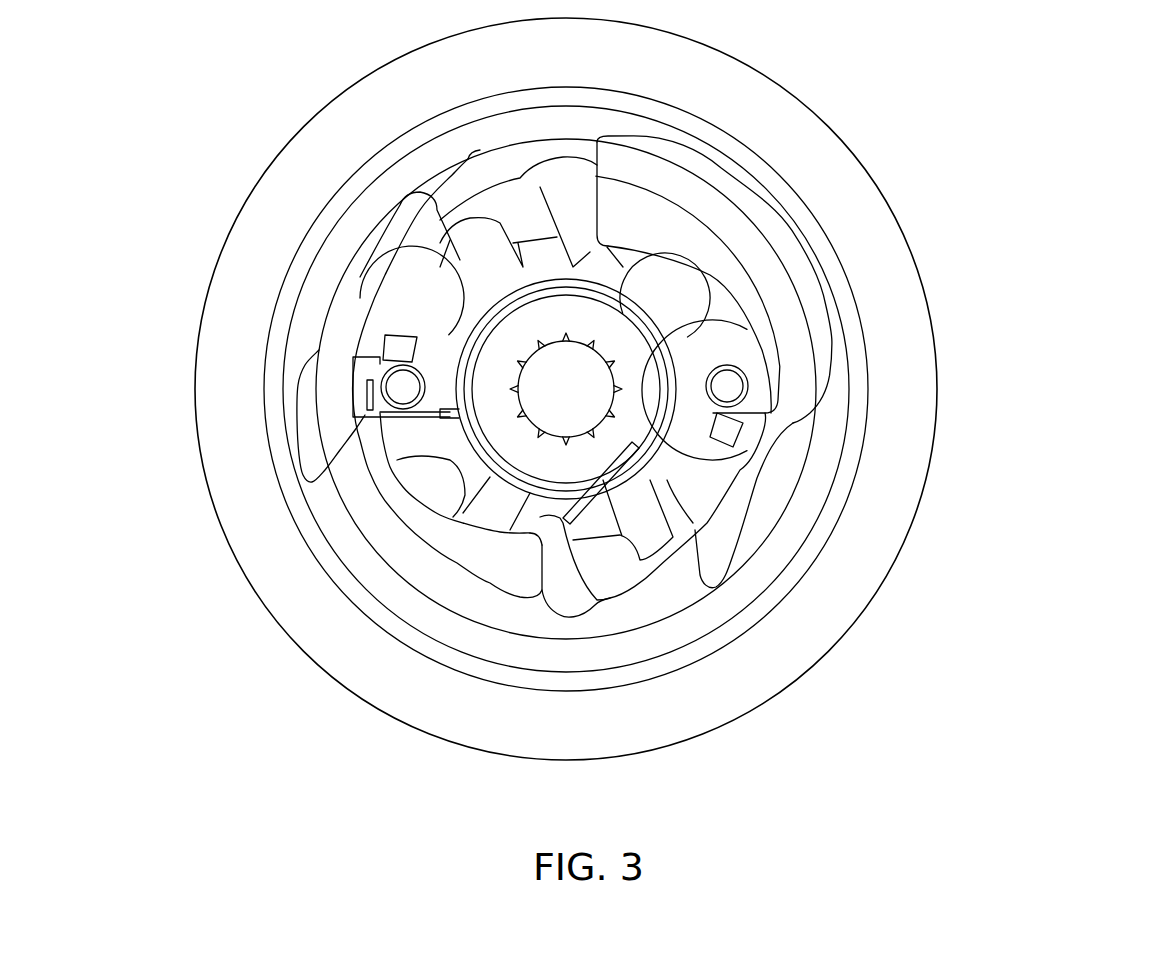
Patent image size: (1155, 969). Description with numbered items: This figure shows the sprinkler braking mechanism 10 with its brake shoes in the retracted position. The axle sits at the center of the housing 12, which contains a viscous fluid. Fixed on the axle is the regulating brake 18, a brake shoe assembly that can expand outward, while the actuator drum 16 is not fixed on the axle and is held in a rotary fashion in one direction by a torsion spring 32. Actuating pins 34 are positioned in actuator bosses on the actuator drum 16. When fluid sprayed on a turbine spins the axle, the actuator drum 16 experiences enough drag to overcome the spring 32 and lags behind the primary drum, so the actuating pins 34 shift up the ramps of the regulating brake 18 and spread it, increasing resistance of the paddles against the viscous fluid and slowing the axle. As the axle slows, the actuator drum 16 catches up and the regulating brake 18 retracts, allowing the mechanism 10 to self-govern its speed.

The sprinkler braking mechanism 10 is at (1021, 388).
The housing 12 is at (905, 497).
The actuator drum 16 is at (712, 567).
The regulating brake 18 is at (802, 329).
The torsion spring 32 is at (379, 407).
The actuating pins 34 is at (735, 380).